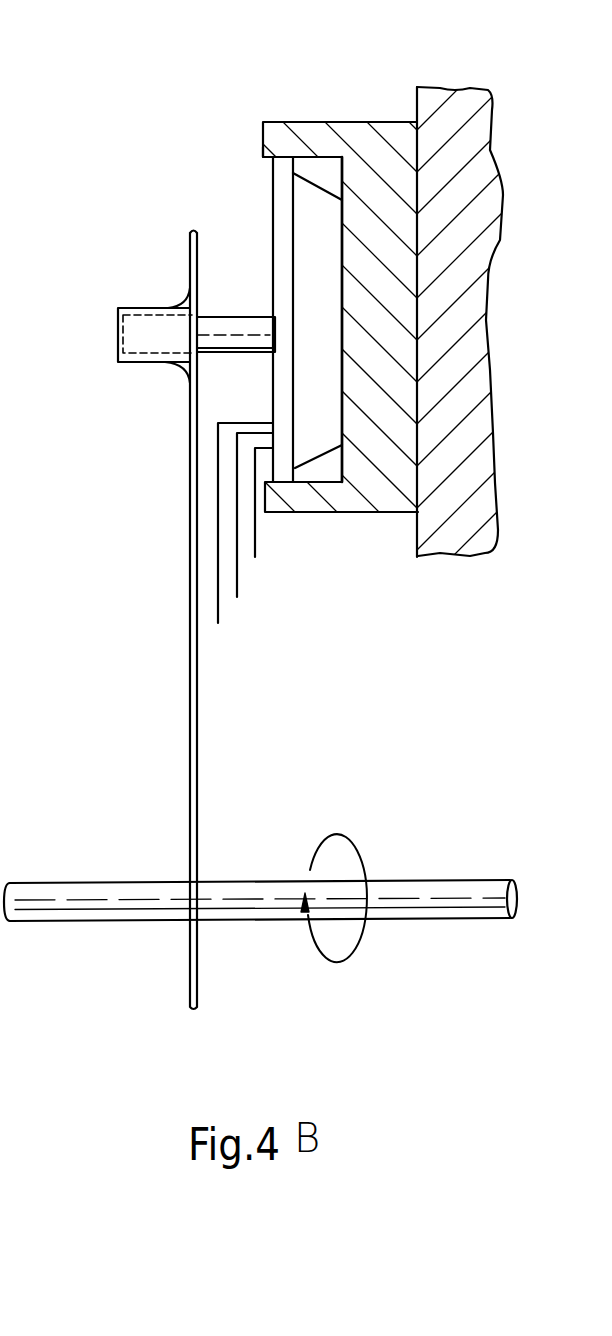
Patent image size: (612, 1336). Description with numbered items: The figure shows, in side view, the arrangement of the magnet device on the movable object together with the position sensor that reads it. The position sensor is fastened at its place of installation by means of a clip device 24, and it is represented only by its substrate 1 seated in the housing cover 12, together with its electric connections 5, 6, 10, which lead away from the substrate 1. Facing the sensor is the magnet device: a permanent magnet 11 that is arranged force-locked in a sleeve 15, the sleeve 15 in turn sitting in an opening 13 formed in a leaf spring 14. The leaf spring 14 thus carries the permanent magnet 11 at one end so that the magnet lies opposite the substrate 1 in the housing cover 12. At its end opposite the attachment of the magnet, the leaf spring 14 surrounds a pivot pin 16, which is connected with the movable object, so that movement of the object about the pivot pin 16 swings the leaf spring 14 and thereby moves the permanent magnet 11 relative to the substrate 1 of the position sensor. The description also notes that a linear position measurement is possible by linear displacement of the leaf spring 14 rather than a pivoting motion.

The substrate 1 is at (282, 167).
The electric connection 5 is at (218, 614).
The electric connection 6 is at (237, 578).
The electric connection 10 is at (255, 546).
The permanent magnet 11 is at (225, 322).
The housing cover 12 is at (315, 198).
The opening 13 is at (190, 336).
The leaf spring 14 is at (196, 758).
The sleeve 15 is at (135, 308).
The pivot pin 16 is at (452, 913).
The clip device 24 is at (252, 150).